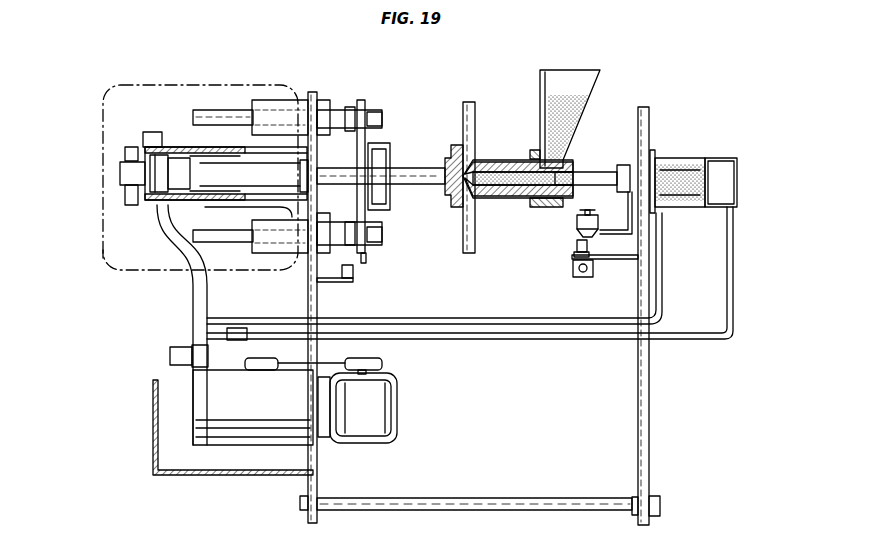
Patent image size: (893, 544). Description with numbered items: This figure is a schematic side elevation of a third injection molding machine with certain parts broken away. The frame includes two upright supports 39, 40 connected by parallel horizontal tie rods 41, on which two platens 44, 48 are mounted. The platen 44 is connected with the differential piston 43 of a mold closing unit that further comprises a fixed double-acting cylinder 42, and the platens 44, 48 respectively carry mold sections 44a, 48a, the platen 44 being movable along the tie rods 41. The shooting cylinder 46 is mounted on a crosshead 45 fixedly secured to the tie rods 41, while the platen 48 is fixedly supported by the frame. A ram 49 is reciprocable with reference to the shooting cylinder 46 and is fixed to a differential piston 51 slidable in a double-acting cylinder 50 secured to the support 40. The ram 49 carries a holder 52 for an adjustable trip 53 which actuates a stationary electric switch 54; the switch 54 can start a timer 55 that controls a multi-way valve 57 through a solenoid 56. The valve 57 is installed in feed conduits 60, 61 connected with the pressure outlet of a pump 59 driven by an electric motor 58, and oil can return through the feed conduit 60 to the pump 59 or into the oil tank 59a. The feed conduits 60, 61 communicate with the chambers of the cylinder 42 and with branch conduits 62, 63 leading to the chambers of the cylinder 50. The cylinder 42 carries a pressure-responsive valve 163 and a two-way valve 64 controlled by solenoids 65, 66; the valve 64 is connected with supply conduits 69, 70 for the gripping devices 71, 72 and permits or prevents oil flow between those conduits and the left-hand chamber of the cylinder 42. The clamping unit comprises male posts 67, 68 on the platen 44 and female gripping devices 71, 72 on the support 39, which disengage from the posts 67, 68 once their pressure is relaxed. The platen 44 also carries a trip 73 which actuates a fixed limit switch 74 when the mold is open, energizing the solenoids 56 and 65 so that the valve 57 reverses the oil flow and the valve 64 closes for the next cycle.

The upright support 39 is at (312, 95).
The upright support 40 is at (643, 108).
The tie rods 41 is at (404, 168).
The double-acting cylinder 42 is at (200, 206).
The differential piston 43 is at (178, 160).
The platen 44 is at (361, 100).
The mold section 44a is at (380, 144).
The crosshead 45 is at (530, 206).
The shooting cylinder 46 is at (497, 160).
The platen 48 is at (468, 102).
The mold section 48a is at (445, 206).
The ram 49 is at (596, 172).
The double-acting cylinder 50 is at (686, 158).
The differential piston 51 is at (718, 158).
The holder 52 is at (604, 226).
The adjustable trip 53 is at (577, 222).
The electric switch 54 is at (577, 246).
The timer 55 is at (573, 268).
The solenoid 56 is at (170, 356).
The multi-way valve 57 is at (192, 350).
The electric motor 58 is at (398, 397).
The pump 59 is at (246, 445).
The oil tank 59a is at (153, 440).
The feed conduit 60 is at (193, 300).
The feed conduit 61 is at (208, 291).
The branch conduit 62 is at (237, 340).
The branch conduit 63 is at (492, 318).
The two-way valve 64 is at (121, 175).
The solenoid 65 is at (130, 205).
The solenoid 66 is at (130, 147).
The post 67 is at (206, 110).
The post 68 is at (236, 242).
The supply conduit 69 is at (103, 228).
The supply conduit 70 is at (103, 136).
The gripping device 71 is at (270, 100).
The gripping device 72 is at (283, 253).
The trip 73 is at (366, 259).
The limit switch 74 is at (353, 280).
The pressure-responsive valve 163 is at (155, 132).